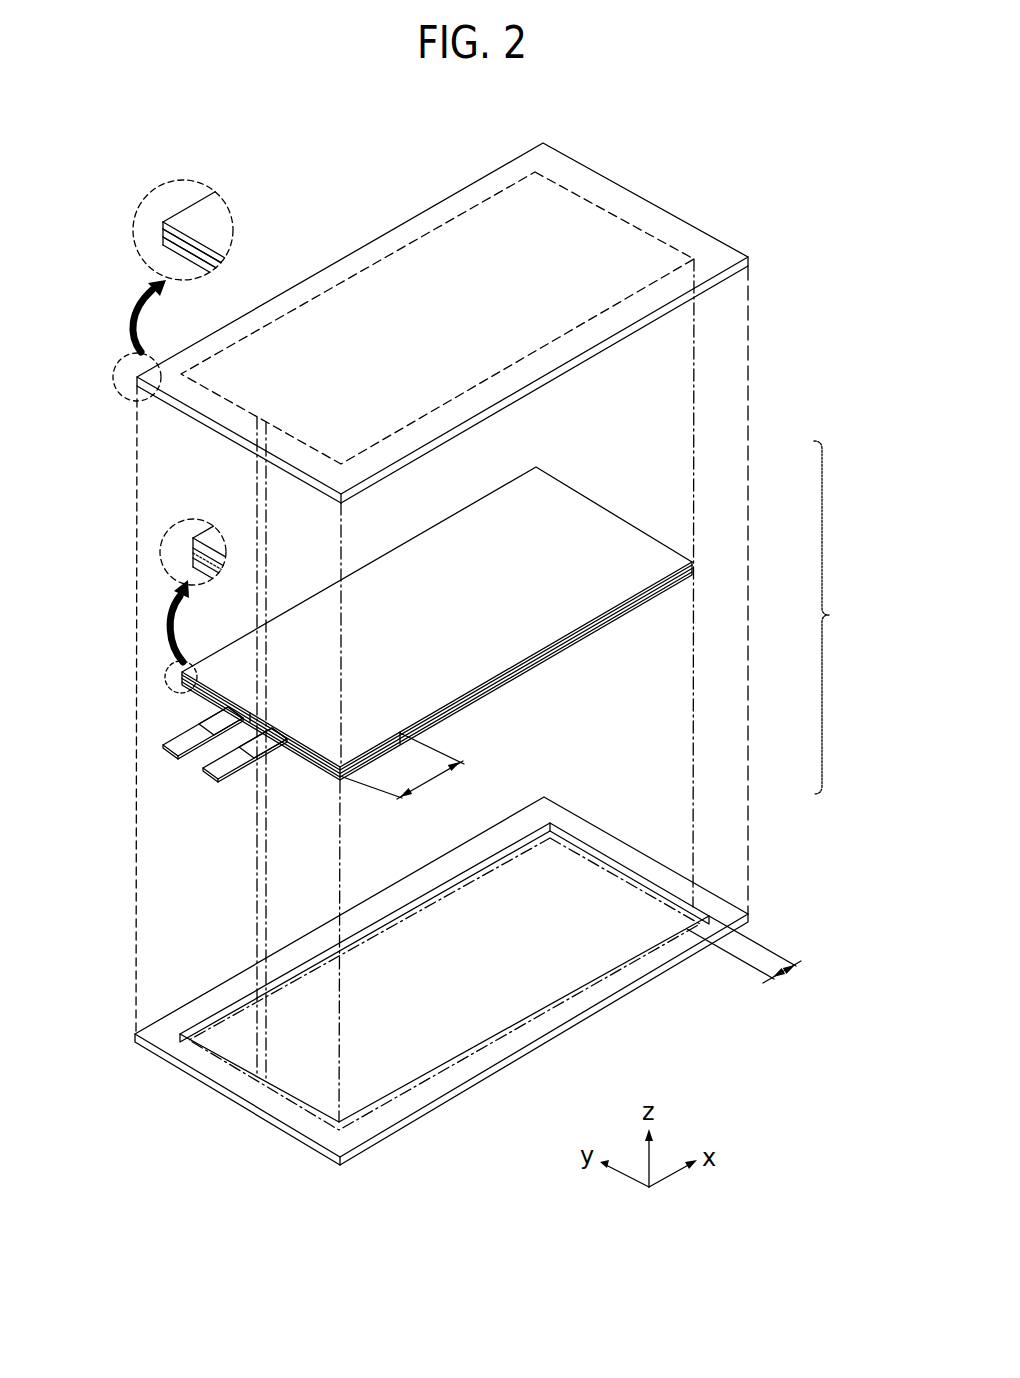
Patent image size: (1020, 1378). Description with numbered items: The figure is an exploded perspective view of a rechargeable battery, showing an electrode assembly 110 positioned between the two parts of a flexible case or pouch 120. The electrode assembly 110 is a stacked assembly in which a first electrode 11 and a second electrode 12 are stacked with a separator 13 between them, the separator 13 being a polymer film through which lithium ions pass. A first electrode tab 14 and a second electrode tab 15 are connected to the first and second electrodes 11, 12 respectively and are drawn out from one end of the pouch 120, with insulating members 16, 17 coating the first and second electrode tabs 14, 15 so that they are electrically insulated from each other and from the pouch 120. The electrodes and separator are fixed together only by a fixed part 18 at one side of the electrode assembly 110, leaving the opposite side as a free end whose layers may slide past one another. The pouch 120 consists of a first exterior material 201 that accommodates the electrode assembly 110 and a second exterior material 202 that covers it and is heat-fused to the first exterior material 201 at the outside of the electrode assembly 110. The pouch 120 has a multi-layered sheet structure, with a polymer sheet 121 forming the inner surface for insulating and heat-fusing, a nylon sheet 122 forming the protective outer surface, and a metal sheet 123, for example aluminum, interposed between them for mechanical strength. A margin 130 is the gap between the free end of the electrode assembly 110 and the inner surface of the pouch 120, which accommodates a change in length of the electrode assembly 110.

The first electrode 11 is at (193, 567).
The second electrode 12 is at (207, 537).
The separator 13 is at (193, 555).
The first electrode tab 14 is at (220, 769).
The second electrode tab 15 is at (173, 748).
The insulating member 16 is at (267, 745).
The insulating member 17 is at (217, 718).
The fixed part 18 is at (402, 771).
The electrode assembly 110 is at (552, 669).
The pouch 120 is at (841, 617).
The polymer sheet 121 is at (163, 241).
The nylon sheet 122 is at (163, 224).
The metal sheet 123 is at (163, 232).
The margin 130 is at (755, 959).
The first exterior material 201 is at (630, 830).
The second exterior material 202 is at (608, 386).